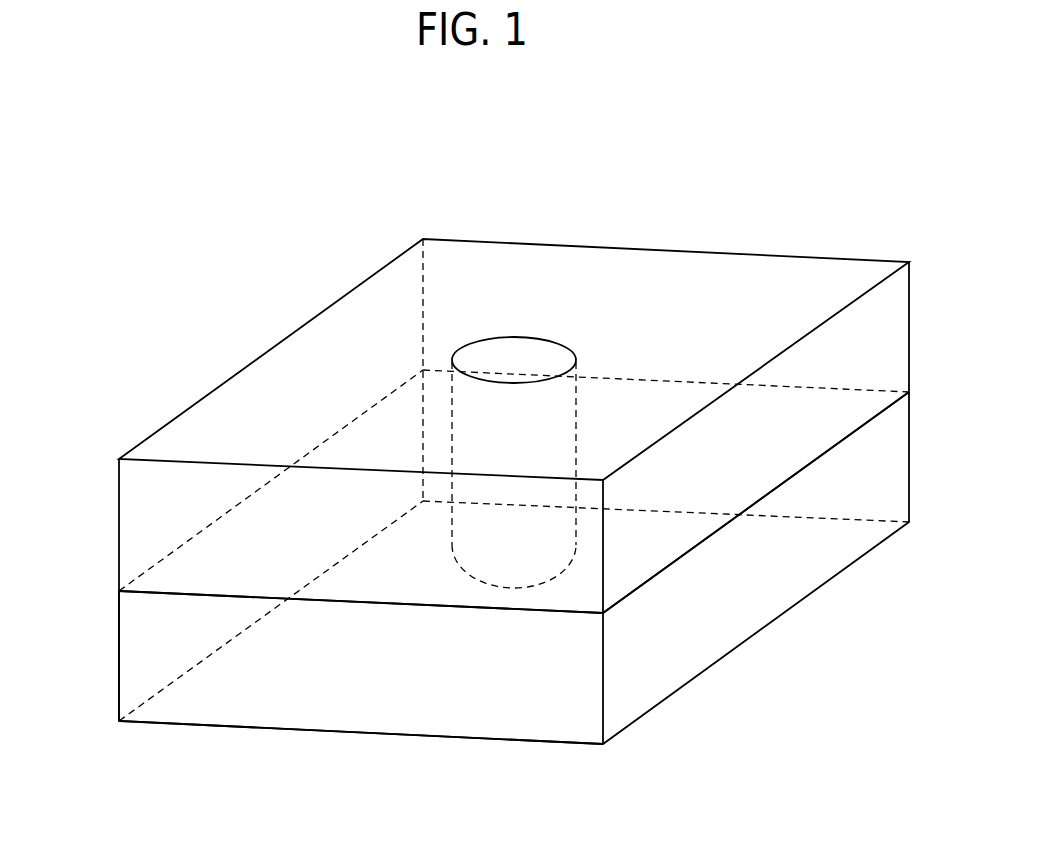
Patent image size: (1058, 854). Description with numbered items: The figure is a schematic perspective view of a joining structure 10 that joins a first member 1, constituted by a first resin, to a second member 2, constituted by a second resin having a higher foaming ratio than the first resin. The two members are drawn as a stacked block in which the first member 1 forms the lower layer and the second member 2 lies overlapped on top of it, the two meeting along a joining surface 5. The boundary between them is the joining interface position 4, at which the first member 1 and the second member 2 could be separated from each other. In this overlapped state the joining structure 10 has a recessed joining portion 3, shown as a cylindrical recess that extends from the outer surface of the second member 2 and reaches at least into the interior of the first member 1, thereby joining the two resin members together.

The joining structure 10 is at (800, 136).
The first member 1 is at (133, 661).
The second member 2 is at (133, 526).
The recessed joining portion 3 is at (515, 350).
The joining interface position 4 is at (862, 427).
The joining surface 5 is at (410, 604).